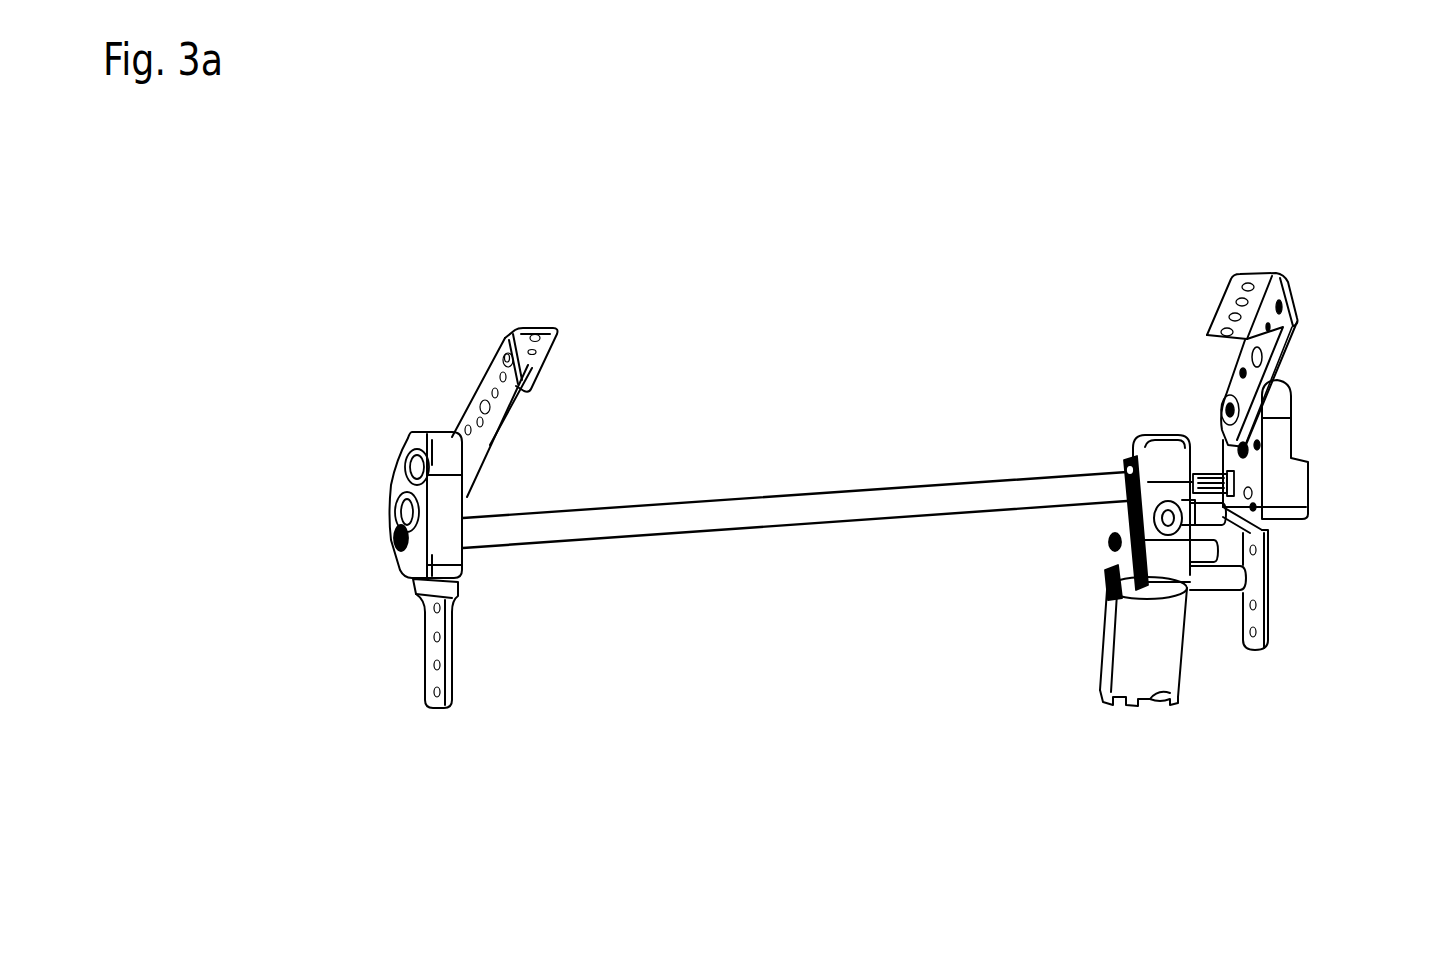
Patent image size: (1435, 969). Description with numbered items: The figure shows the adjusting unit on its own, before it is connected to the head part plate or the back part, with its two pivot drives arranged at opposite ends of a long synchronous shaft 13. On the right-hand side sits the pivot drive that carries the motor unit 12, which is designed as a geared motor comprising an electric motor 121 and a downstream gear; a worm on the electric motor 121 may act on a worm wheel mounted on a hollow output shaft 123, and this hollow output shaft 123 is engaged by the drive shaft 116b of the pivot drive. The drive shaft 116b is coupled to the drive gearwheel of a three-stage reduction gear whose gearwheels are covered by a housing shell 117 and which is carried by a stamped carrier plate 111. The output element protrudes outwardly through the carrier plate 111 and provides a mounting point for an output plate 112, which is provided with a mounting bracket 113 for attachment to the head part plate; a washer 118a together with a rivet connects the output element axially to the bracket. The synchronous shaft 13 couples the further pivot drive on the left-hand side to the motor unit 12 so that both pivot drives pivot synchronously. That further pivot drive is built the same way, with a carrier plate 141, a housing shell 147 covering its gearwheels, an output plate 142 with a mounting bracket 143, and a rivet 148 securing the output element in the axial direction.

The motor unit 12 is at (1089, 620).
The synchronous shaft 13 is at (825, 512).
The carrier plate 111 is at (1258, 632).
The output plate 112 is at (1237, 383).
The mounting bracket 113 is at (1267, 273).
The drive shaft 116b is at (1207, 472).
The housing shell 117 is at (1275, 446).
The washer 118a is at (1240, 414).
The electric motor 121 is at (1140, 660).
The hollow output shaft 123 is at (1122, 468).
The carrier plate 141 is at (445, 676).
The output plate 142 is at (488, 380).
The mounting bracket 143 is at (533, 330).
The housing shell 147 is at (440, 443).
The rivet 148 is at (406, 468).